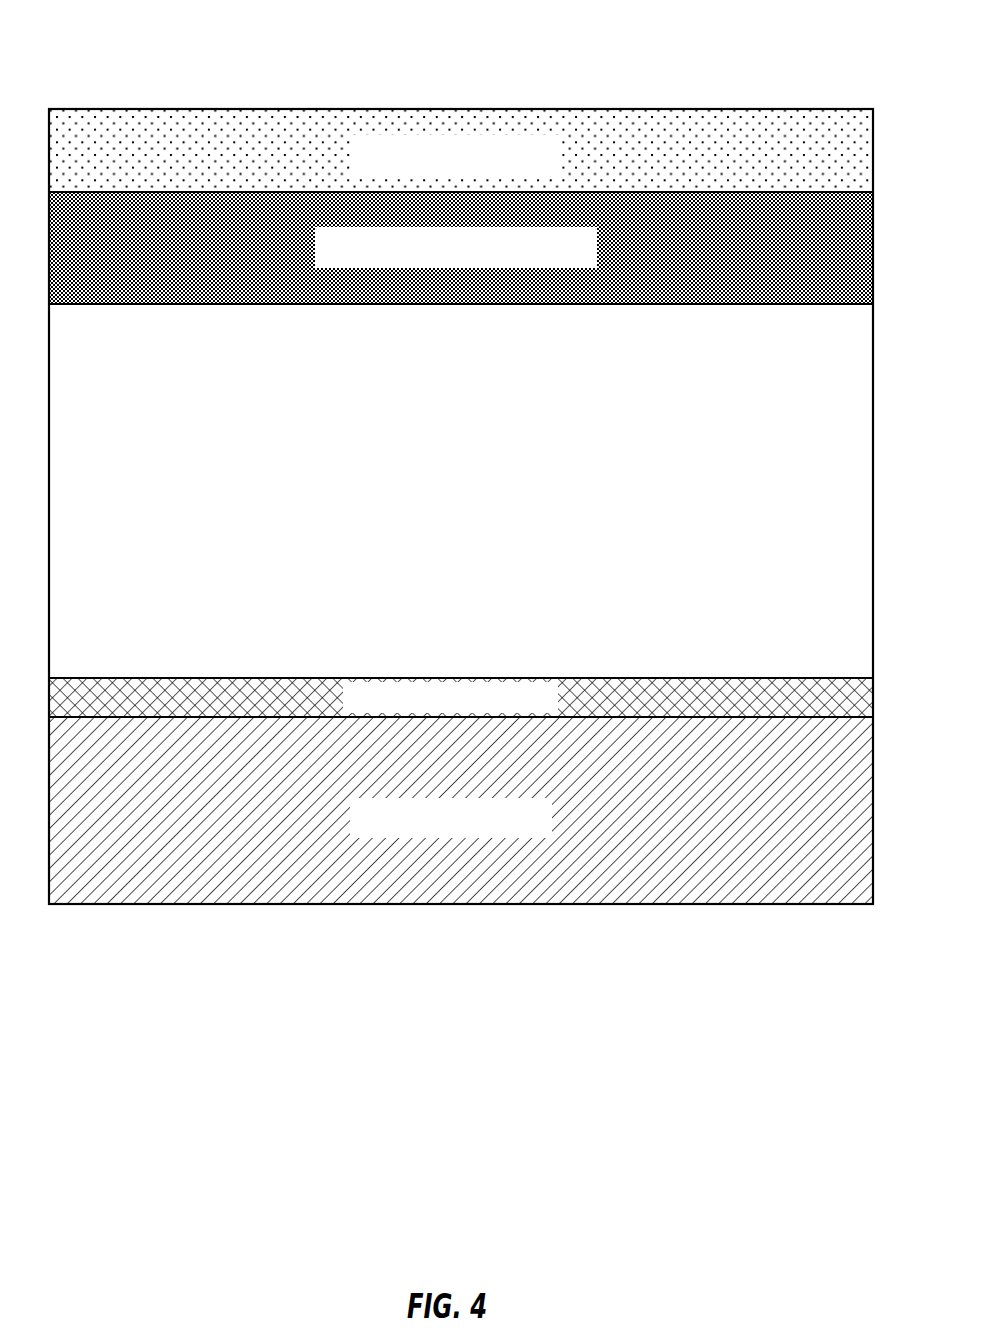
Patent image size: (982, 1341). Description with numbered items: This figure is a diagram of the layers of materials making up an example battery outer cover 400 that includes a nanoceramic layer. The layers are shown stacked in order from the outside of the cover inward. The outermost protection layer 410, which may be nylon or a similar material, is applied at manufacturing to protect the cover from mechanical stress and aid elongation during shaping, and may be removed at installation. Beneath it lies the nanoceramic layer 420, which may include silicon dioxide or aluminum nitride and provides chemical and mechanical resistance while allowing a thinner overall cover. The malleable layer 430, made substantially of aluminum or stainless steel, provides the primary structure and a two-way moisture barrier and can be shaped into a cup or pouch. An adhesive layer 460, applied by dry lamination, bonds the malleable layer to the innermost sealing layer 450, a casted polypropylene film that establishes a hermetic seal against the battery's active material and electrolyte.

The battery outer cover 400 is at (461, 456).
The protection layer 410 is at (545, 166).
The nanoceramic layer 420 is at (560, 260).
The malleable layer 430 is at (545, 516).
The adhesive layer 460 is at (535, 708).
The sealing layer 450 is at (528, 828).